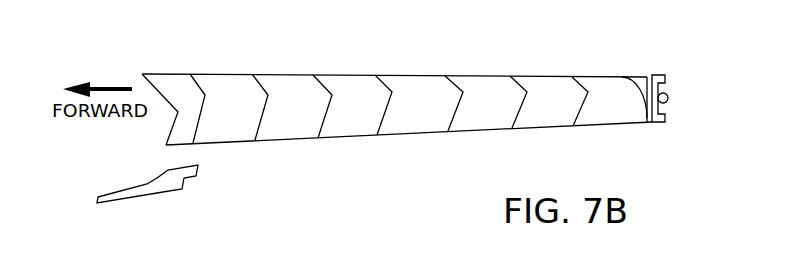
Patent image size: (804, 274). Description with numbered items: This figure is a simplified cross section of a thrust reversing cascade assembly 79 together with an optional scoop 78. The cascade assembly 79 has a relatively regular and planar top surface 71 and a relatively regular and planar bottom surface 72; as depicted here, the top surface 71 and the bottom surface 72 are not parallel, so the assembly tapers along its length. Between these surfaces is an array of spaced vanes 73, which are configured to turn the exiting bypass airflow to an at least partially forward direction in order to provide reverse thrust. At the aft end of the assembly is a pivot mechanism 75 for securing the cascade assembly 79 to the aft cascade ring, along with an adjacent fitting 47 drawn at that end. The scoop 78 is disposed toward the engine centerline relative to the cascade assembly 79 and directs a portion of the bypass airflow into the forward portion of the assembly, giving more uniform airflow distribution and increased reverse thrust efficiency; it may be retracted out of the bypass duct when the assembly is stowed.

The retaining bracket 47 is at (655, 73).
The top surface 71 is at (276, 74).
The bottom surface 72 is at (292, 142).
The spaced vanes 73 is at (323, 122).
The pivot mechanism 75 is at (665, 105).
The scoop 78 is at (166, 194).
The cascade assembly 79 is at (620, 45).